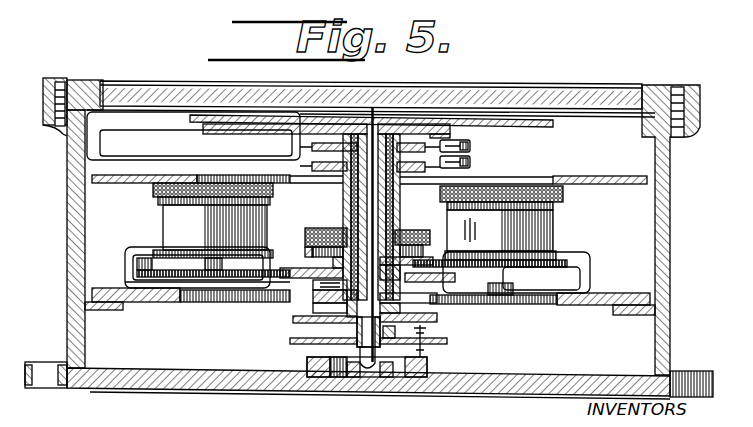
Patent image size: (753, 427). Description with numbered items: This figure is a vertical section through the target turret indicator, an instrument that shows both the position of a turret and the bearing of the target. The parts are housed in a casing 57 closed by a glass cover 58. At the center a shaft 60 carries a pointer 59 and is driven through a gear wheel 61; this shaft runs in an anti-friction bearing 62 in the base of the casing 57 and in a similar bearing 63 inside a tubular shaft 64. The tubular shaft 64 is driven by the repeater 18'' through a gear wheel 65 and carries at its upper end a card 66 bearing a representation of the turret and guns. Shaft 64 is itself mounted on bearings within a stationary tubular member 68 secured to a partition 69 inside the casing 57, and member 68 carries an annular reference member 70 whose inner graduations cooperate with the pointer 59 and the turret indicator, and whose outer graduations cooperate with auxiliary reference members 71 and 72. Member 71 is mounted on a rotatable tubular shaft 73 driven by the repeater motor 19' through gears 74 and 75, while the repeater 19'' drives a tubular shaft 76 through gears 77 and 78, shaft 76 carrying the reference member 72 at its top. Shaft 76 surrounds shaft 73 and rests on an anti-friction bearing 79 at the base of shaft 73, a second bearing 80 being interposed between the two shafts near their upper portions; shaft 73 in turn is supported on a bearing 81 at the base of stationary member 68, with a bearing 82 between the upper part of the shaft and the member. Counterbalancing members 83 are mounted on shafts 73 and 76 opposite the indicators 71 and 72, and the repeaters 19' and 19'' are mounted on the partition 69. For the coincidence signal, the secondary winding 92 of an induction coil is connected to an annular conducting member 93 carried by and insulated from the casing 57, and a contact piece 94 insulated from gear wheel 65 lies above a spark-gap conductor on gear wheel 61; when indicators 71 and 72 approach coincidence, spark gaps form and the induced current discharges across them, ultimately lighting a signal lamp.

The casing 57 is at (672, 226).
The glass cover 58 is at (503, 90).
The pointer 59 is at (252, 110).
The shaft 60 is at (374, 118).
The gear wheel 61 is at (447, 343).
The anti-friction bearing 62 is at (376, 380).
The anti-friction bearing 63 is at (406, 312).
The tubular shaft 64 is at (366, 197).
The gear wheel 65 is at (293, 322).
The card 66 is at (497, 176).
The stationary tubular member 68 is at (386, 191).
The partition 69 is at (590, 300).
The annular reference member 70 is at (553, 123).
The auxiliary reference member 71 is at (173, 124).
The auxiliary reference member 72 is at (118, 126).
The rotatable tubular shaft 73 is at (346, 202).
The gear 74 is at (250, 283).
The gear 75 is at (293, 273).
The tubular shaft 76 is at (396, 218).
The gear 77 is at (591, 265).
The gear 78 is at (430, 269).
The anti-friction bearing 79 is at (323, 285).
The anti-friction bearing 80 is at (318, 166).
The anti-friction bearing 81 is at (325, 308).
The anti-friction bearing 82 is at (320, 151).
The counterbalancing members 83 is at (470, 153).
The secondary winding 92 is at (384, 334).
The annular member 93 is at (315, 356).
The contact piece 94 is at (426, 331).
The repeater 19' is at (213, 220).
The repeater 19'' is at (517, 223).
The repeater 18'' is at (297, 233).